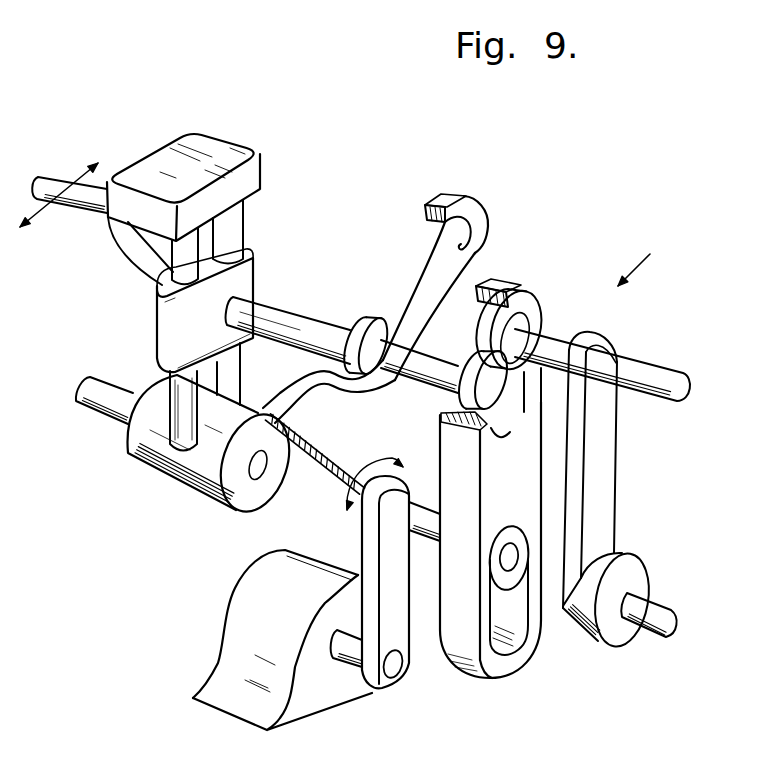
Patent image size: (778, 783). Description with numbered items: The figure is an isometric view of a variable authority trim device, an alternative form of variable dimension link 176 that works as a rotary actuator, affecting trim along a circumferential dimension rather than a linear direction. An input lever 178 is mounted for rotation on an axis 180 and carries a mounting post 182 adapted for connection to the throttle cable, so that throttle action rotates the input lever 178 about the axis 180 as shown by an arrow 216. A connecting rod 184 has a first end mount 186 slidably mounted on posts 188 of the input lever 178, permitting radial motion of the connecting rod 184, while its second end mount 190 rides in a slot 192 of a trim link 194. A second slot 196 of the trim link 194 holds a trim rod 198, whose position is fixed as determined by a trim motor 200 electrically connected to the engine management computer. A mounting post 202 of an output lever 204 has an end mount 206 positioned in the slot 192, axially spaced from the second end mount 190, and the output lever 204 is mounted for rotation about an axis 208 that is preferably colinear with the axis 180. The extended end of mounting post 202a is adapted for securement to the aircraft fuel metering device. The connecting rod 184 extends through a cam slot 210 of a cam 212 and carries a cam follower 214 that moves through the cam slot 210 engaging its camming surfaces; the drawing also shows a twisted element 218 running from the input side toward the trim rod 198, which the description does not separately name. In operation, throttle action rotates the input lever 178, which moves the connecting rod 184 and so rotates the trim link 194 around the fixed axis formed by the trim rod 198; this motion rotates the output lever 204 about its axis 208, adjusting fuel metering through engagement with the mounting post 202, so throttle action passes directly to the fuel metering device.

The variable dimension link 176 is at (650, 259).
The input lever 178 is at (245, 160).
The axis 180 is at (112, 413).
The mounting post 182 is at (93, 217).
The connecting rod 184 is at (314, 319).
The first end mount 186 is at (254, 280).
The posts 188 is at (243, 232).
The second end mount 190 is at (478, 390).
The slot 192 is at (500, 442).
The trim link 194 is at (467, 674).
The slot 196 is at (511, 638).
The trim rod 198 is at (433, 540).
The trim motor 200 is at (251, 571).
The mounting post 202 is at (580, 341).
The extended end of mounting post 202a is at (673, 375).
The output lever 204 is at (611, 477).
The end mount 206 is at (521, 320).
The axis 208 is at (650, 607).
The cam slot 210 is at (472, 248).
The cam 212 is at (480, 274).
The cam follower 214 is at (380, 307).
The arrow 216 is at (74, 182).
The twisted cable 218 is at (357, 492).